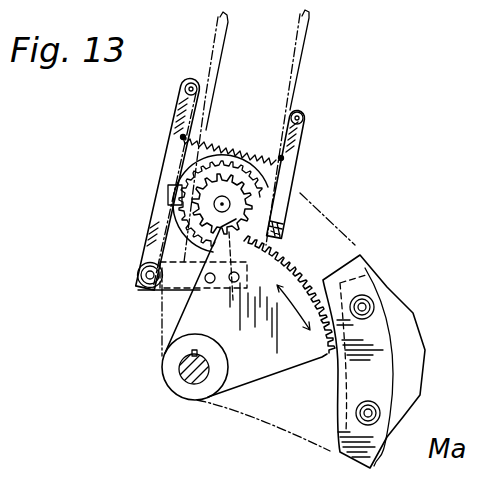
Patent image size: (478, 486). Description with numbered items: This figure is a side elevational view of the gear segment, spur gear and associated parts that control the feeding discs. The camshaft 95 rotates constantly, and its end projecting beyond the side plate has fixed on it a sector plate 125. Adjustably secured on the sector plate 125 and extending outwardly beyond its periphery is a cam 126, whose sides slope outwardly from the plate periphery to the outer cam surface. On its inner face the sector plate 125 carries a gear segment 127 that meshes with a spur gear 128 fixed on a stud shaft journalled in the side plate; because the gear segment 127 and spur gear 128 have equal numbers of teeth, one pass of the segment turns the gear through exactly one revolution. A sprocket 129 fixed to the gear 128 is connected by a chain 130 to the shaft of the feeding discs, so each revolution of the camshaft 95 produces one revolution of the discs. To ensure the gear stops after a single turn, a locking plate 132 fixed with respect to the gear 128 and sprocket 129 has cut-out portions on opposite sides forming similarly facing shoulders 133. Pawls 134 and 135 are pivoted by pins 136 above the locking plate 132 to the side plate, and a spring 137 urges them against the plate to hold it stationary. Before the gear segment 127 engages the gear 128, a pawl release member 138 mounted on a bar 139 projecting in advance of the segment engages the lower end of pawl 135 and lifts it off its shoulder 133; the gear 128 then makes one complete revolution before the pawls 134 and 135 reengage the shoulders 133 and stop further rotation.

The camshaft 95 is at (180, 370).
The sector plate 125 is at (312, 218).
The cam 126 is at (413, 325).
The gear segment 127 is at (272, 267).
The spur gear 128 is at (210, 208).
The sprocket 129 is at (182, 200).
The chain 130 is at (305, 50).
The locking plate 132 is at (190, 233).
The shoulders 133 is at (168, 177).
The pawl 134 is at (303, 128).
The pawl 135 is at (184, 96).
The pins 136 is at (192, 83).
The spring 137 is at (234, 140).
The pawl release member 138 is at (145, 290).
The bar 139 is at (172, 285).